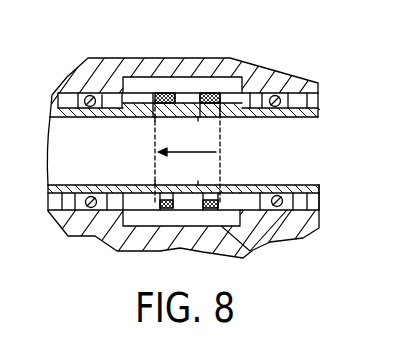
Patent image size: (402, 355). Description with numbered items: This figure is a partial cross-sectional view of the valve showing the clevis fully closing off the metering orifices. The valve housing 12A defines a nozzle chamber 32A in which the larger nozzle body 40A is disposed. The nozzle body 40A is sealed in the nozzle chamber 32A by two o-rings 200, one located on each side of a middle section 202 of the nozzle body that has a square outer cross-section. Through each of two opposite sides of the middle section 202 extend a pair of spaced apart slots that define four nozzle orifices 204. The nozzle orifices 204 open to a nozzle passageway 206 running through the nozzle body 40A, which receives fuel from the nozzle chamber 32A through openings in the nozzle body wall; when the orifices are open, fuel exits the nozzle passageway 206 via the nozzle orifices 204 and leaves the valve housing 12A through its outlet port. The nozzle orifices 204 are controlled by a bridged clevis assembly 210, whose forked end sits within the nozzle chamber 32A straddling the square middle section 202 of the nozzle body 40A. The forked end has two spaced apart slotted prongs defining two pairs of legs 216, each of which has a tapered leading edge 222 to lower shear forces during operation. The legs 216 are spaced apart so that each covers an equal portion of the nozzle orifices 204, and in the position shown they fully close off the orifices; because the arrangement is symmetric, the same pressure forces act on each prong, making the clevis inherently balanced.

The o-rings 200 is at (68, 76).
The nozzle passageway 206 is at (95, 160).
The nozzle chamber 32A is at (114, 80).
The valve housing 12A is at (266, 66).
The bridged clevis assembly 210 is at (188, 88).
The legs 216 is at (179, 92).
The tapered leading edge 222 is at (155, 93).
The nozzle orifices 204 is at (198, 120).
The middle section 202 is at (128, 118).
The nozzle body 40A is at (310, 118).